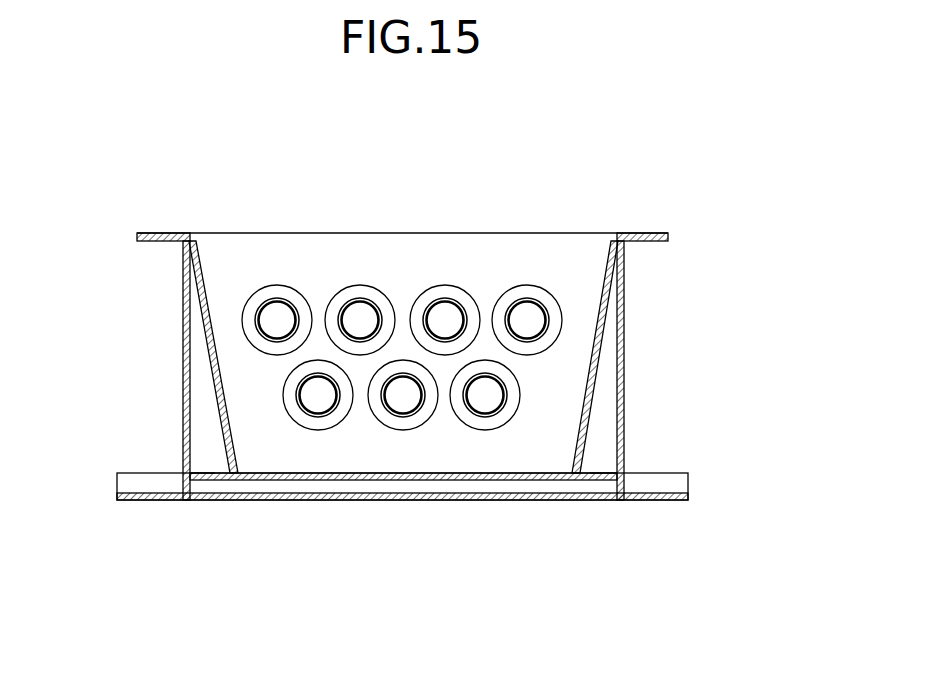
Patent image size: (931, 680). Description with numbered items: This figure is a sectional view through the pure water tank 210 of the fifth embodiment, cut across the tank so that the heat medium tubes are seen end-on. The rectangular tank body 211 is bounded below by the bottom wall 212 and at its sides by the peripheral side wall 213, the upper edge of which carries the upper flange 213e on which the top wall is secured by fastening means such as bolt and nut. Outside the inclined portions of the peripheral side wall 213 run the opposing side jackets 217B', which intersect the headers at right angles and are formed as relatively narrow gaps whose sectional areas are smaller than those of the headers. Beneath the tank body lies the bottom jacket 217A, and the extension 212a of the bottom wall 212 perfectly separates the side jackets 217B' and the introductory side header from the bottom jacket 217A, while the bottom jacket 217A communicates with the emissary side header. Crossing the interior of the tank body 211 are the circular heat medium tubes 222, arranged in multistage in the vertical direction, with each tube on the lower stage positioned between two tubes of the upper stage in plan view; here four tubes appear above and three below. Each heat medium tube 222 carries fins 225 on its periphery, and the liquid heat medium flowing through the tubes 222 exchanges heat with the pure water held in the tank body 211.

The pure water tank 210 is at (441, 156).
The tank body 211 is at (504, 226).
The bottom wall 212 is at (478, 480).
The extension of the bottom wall 212a is at (205, 472).
The peripheral side wall 213 is at (605, 310).
The upper flange 213e is at (658, 231).
The bottom jacket 217A is at (350, 484).
The side jacket 217B' is at (406, 370).
The heat medium tube 222 is at (369, 300).
The fin 225 is at (283, 287).